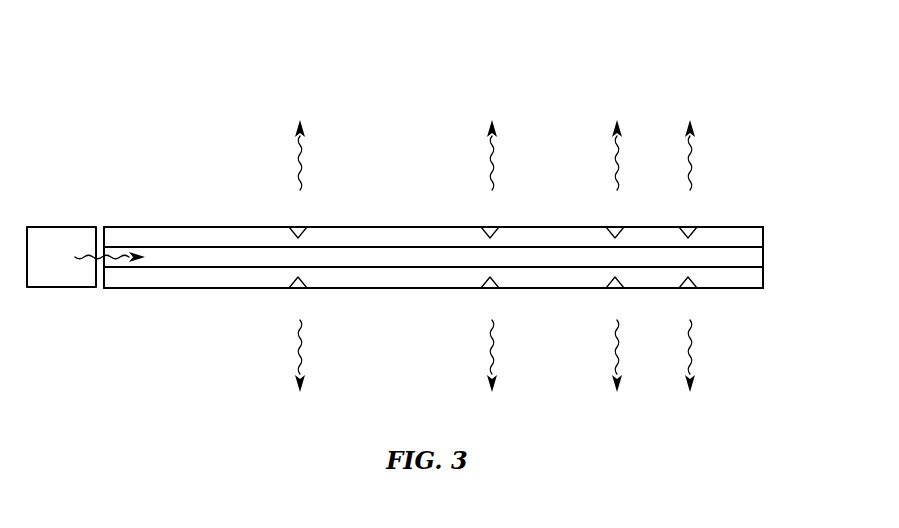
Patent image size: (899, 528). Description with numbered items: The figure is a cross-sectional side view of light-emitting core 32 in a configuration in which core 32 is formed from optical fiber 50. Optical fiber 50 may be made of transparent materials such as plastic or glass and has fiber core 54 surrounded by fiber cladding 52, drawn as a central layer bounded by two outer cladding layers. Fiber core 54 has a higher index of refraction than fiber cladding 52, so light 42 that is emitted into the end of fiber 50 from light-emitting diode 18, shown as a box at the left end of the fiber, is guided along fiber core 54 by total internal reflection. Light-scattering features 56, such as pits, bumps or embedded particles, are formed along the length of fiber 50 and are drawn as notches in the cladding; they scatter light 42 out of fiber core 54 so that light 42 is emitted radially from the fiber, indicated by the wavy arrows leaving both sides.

The light-emitting diode 18 is at (58, 281).
The light-emitting core 32 is at (630, 62).
The light 42 is at (120, 250).
The optical fiber 50 is at (760, 199).
The fiber cladding 52 is at (758, 236).
The fiber core 54 is at (758, 258).
The light-scattering features 56 is at (299, 235).